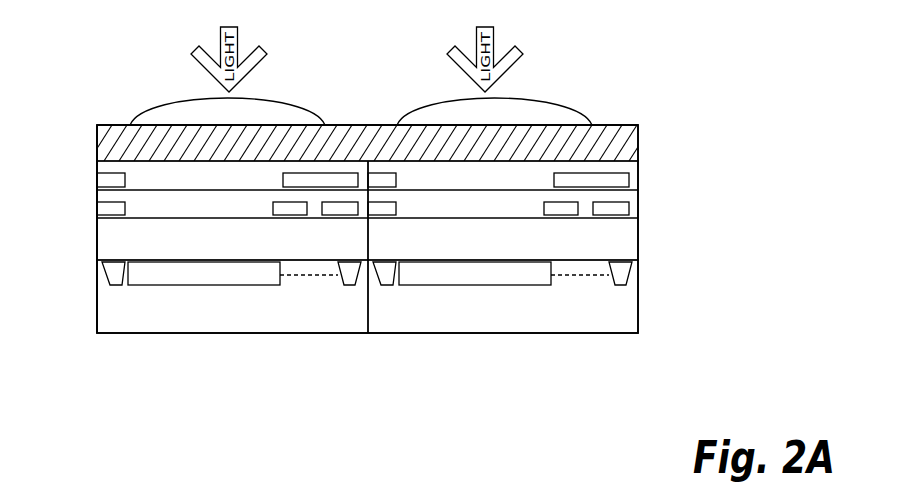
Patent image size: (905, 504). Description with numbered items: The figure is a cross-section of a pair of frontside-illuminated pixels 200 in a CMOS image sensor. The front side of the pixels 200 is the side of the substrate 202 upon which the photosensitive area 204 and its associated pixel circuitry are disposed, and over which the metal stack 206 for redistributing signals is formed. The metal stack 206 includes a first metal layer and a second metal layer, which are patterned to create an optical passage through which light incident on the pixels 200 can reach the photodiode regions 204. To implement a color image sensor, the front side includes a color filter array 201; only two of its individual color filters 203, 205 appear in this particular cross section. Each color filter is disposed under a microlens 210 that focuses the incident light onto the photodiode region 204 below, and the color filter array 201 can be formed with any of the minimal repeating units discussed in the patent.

The frontside-illuminated pixels 200 is at (702, 53).
The color filter array 201 is at (644, 125).
The substrate 202 is at (644, 263).
The color filter 203 is at (93, 121).
The photosensitive area 204 is at (176, 282).
The color filter 205 is at (623, 115).
The metal stack 206 is at (644, 163).
The microlens 210 is at (242, 122).